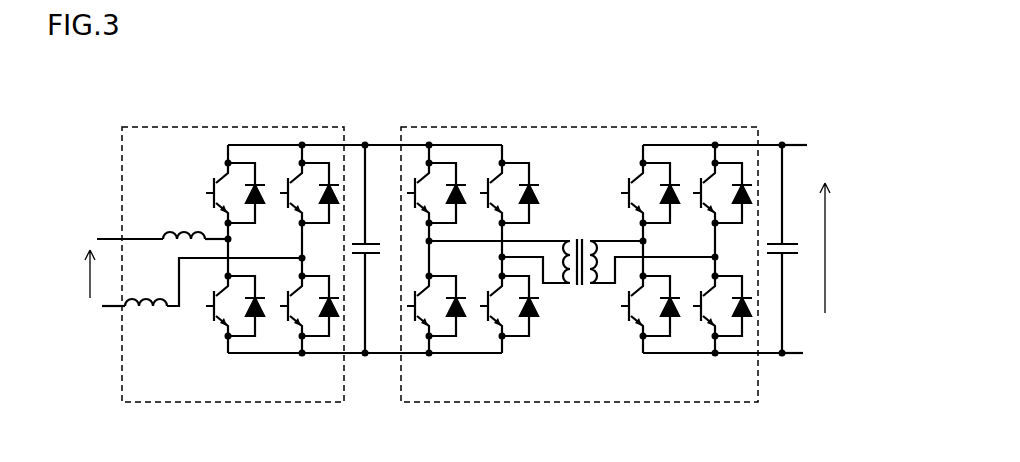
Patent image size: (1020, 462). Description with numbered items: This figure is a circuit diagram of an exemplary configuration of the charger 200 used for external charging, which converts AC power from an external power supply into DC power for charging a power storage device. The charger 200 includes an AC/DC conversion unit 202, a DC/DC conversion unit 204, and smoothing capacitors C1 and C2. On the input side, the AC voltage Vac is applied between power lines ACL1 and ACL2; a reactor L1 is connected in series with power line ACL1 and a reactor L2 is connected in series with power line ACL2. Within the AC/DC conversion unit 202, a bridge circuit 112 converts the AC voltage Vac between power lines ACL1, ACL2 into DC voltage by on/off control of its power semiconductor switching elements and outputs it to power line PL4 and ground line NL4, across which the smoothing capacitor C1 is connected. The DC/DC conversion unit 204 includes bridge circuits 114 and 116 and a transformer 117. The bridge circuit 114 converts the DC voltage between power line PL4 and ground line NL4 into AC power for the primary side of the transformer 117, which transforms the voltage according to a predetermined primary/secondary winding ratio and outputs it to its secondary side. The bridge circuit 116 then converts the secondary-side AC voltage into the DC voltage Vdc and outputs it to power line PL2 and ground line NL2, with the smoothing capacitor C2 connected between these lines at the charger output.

The charger 200 is at (696, 91).
The AC/DC conversion unit 202 is at (260, 126).
The DC/DC conversion unit 204 is at (540, 127).
The bridge circuit 112 is at (305, 363).
The bridge circuit 114 is at (507, 363).
The bridge circuit 116 is at (720, 363).
The transformer 117 is at (585, 305).
The smoothing capacitor C1 is at (375, 243).
The smoothing capacitor C2 is at (789, 242).
The reactor L1 is at (170, 229).
The reactor L2 is at (161, 313).
The power line PL4 is at (390, 145).
The ground line NL4 is at (391, 355).
The power line PL2 is at (768, 145).
The ground line NL2 is at (770, 355).
The power line ACL1 is at (104, 238).
The power line ACL2 is at (104, 309).
The AC voltage Vac is at (73, 274).
The DC voltage Vdc is at (821, 273).